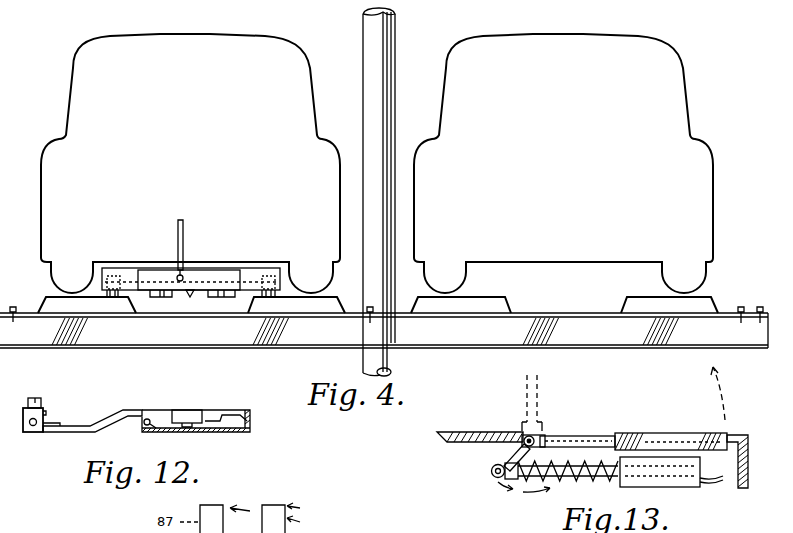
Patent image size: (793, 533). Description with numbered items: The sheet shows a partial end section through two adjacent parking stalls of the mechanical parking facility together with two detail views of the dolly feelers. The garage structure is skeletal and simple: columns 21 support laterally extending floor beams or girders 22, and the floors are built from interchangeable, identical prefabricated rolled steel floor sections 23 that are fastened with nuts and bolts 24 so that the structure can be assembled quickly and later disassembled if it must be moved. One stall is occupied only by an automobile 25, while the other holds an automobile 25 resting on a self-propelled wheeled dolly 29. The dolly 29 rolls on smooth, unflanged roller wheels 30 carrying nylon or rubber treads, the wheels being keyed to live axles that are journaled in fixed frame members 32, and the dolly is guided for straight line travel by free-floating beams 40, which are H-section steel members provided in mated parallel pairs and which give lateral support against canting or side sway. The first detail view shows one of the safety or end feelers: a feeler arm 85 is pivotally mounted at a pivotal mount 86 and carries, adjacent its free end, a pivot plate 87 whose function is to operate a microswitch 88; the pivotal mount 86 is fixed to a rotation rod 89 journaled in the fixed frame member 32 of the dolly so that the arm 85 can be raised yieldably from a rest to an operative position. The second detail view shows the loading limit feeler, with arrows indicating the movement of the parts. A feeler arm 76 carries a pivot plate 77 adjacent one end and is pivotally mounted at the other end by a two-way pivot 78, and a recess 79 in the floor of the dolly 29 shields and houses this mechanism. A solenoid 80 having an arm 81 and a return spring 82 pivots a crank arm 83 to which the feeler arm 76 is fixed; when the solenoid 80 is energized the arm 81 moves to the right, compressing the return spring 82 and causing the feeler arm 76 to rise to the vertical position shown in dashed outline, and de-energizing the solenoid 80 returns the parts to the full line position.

In FIG. 4, the column 21 is at (396, 52).
In FIG. 4, the floor beam 22 is at (306, 338).
In FIG. 4, the floor section 23 is at (43, 299).
In FIG. 4, the nuts and bolts 24 is at (12, 319).
In FIG. 4, the automobile 25 is at (286, 43).
In FIG. 4, the self-propelled wheeled dolly 29 is at (226, 271).
In FIG. 4, the roller wheel 30 is at (110, 299).
In FIG. 13, the fixed frame member 32 is at (750, 461).
In FIG. 4, the free-floating beam 40 is at (153, 298).
In FIG. 13, the feeler arm 76 is at (597, 440).
In FIG. 13, the pivot plate 77 is at (649, 437).
In FIG. 13, the two-way pivot 78 is at (541, 437).
In FIG. 13, the recess 79 is at (580, 434).
In FIG. 13, the solenoid 80 is at (681, 487).
In FIG. 13, the solenoid arm 81 is at (580, 480).
In FIG. 13, the return spring 82 is at (610, 480).
In FIG. 13, the crank arm 83 is at (516, 452).
In FIG. 4, the safety feeler arm 85 is at (184, 248).
In FIG. 12, the safety feeler arm 85 is at (102, 421).
In FIG. 12, the pivotal mount 86 is at (32, 429).
In FIG. 12, the pivot plate 87 is at (231, 433).
In FIG. 12, the microswitch 88 is at (184, 410).
In FIG. 12, the rotation rod 89 is at (41, 404).